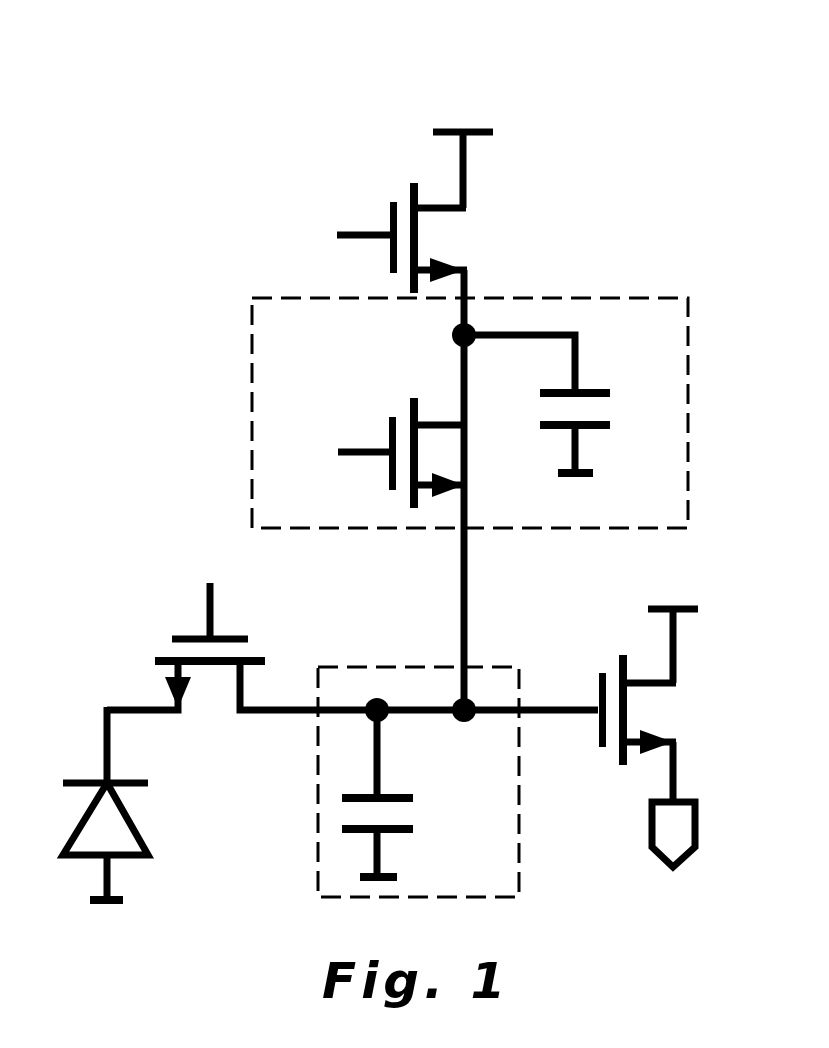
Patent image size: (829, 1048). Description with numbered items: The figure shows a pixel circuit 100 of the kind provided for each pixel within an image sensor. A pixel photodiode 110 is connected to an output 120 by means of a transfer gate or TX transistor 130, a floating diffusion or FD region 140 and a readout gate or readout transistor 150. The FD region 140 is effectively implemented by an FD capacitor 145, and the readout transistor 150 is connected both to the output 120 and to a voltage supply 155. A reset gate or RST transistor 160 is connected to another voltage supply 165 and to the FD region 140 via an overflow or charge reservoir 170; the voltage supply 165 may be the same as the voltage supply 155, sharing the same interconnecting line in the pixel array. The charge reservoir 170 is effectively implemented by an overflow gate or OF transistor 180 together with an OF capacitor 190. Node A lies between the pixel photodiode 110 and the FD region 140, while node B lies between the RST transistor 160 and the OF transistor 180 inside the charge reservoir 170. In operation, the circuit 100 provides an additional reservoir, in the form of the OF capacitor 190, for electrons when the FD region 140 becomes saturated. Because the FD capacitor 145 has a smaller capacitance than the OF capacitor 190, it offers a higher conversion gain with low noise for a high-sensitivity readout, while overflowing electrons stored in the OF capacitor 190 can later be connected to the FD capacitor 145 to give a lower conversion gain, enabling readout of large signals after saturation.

The pixel circuit 100 is at (292, 134).
The pixel photodiode 110 is at (87, 803).
The output 120 is at (674, 822).
The TX transistor 130 is at (186, 633).
The FD region 140 is at (520, 865).
The FD capacitor 145 is at (404, 793).
The readout transistor 150 is at (619, 705).
The voltage supply 155 is at (673, 630).
The RST transistor 160 is at (377, 238).
The voltage supply 165 is at (463, 153).
The charge reservoir 170 is at (645, 297).
The OF transistor 180 is at (375, 453).
The OF capacitor 190 is at (563, 404).